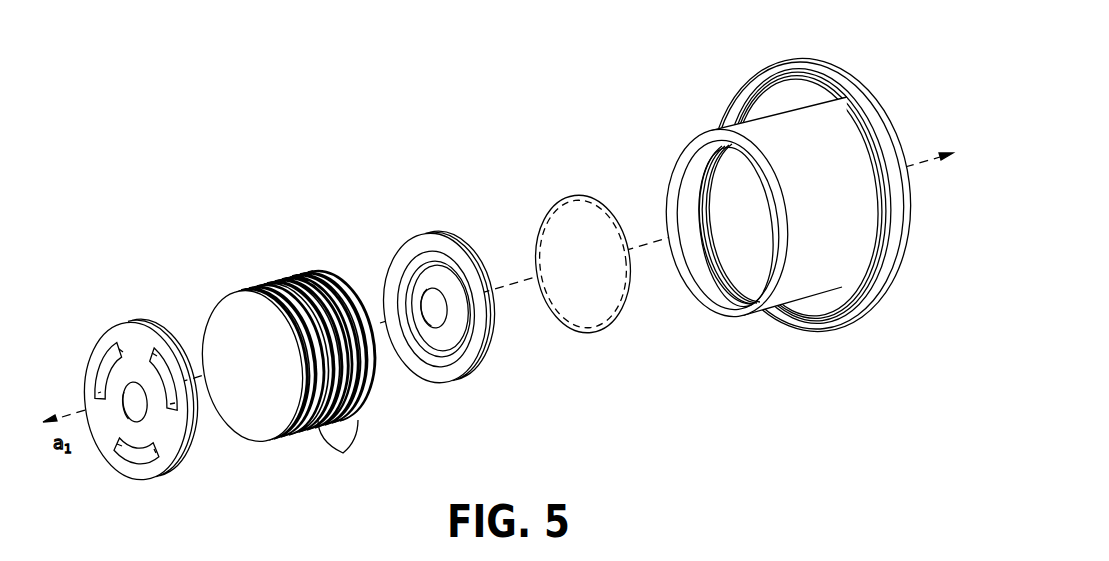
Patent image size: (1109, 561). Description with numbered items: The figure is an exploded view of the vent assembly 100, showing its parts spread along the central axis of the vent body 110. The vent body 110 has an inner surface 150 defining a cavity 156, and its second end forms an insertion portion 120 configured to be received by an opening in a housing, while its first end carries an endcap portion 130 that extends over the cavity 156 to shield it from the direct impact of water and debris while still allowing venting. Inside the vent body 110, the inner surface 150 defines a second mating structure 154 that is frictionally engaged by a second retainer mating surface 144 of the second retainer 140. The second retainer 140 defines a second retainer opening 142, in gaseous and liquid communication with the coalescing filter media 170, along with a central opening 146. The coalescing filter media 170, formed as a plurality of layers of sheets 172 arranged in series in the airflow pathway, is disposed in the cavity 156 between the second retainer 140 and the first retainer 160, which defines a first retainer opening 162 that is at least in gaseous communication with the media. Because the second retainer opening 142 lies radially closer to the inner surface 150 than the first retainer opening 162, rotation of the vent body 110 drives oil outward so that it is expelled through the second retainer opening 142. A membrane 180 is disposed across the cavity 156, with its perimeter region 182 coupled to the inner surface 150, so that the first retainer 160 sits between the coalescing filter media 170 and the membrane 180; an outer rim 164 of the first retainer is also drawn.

The vent assembly 100 is at (397, 142).
The vent body 110 is at (782, 192).
The insertion portion 120 is at (755, 130).
The endcap portion 130 is at (903, 138).
The second retainer 140 is at (149, 392).
The second retainer opening 142 is at (112, 352).
The second retainer mating surface 144 is at (175, 343).
The central opening 146 is at (130, 410).
The inner surface 150 is at (708, 200).
The second mating structure 154 is at (700, 238).
The cavity 156 is at (724, 267).
The first retainer 160 is at (454, 312).
The first retainer opening 162 is at (438, 304).
The outer rim 164 is at (495, 320).
The coalescing filter media 170 is at (283, 358).
The layers of sheets 172 is at (341, 450).
The membrane 180 is at (587, 267).
The perimeter region 182 is at (594, 333).